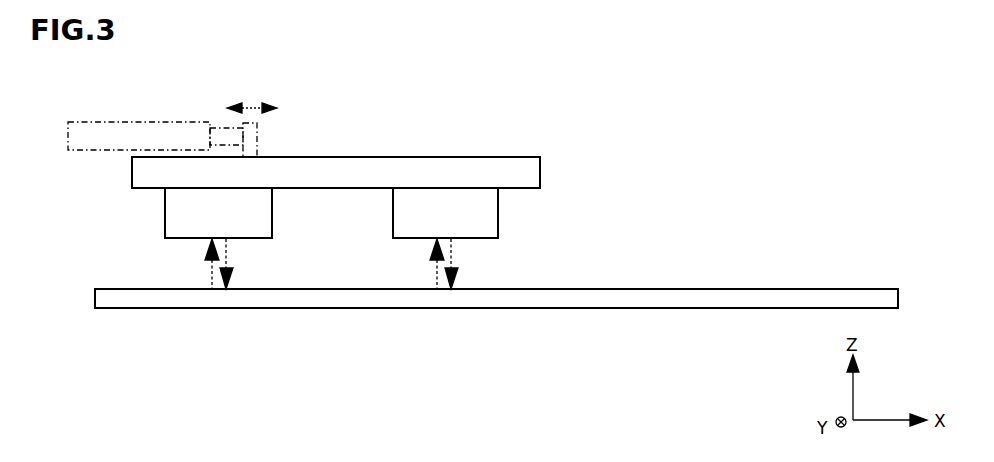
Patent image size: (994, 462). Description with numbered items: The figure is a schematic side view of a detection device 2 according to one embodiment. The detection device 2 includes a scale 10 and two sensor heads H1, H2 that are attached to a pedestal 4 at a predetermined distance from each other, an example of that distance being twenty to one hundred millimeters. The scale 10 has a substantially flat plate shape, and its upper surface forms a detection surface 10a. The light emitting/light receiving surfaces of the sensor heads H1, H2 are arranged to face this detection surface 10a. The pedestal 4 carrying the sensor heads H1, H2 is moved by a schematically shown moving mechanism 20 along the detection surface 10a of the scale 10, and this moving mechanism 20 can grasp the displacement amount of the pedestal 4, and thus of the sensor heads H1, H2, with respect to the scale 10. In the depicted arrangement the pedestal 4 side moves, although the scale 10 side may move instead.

The detection device 2 is at (357, 188).
The pedestal 4 is at (335, 172).
The sensor head H1 is at (191, 228).
The sensor head H2 is at (417, 220).
The moving mechanism 20 is at (153, 133).
The scale 10 is at (385, 298).
The detection surface 10a is at (713, 289).